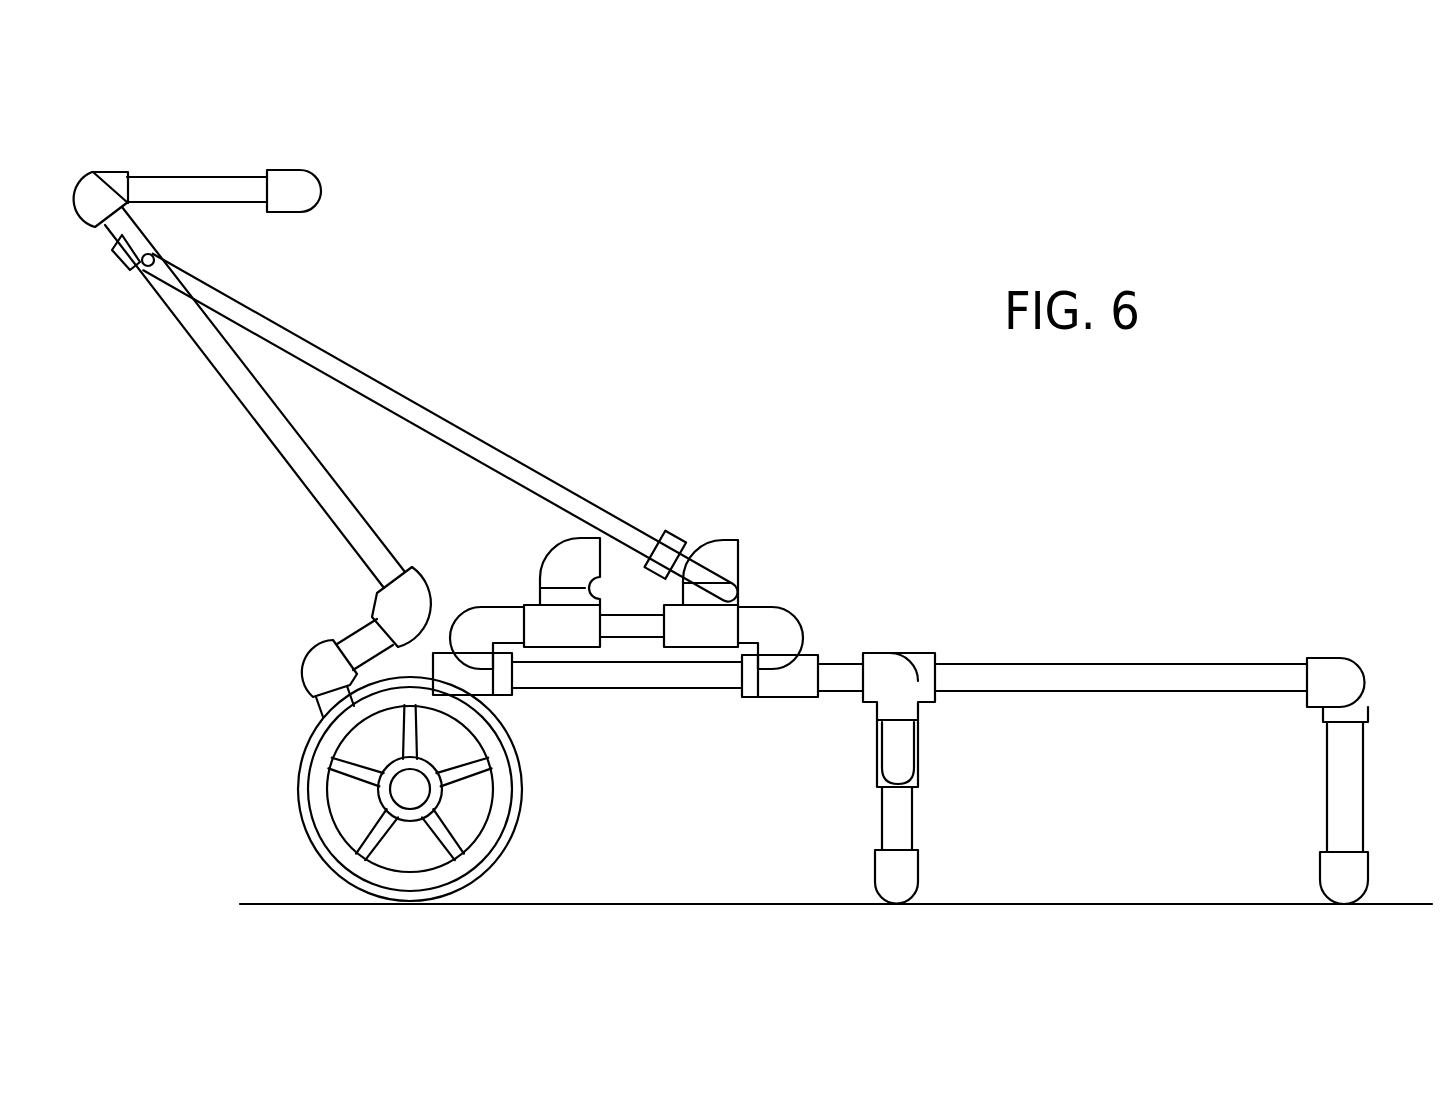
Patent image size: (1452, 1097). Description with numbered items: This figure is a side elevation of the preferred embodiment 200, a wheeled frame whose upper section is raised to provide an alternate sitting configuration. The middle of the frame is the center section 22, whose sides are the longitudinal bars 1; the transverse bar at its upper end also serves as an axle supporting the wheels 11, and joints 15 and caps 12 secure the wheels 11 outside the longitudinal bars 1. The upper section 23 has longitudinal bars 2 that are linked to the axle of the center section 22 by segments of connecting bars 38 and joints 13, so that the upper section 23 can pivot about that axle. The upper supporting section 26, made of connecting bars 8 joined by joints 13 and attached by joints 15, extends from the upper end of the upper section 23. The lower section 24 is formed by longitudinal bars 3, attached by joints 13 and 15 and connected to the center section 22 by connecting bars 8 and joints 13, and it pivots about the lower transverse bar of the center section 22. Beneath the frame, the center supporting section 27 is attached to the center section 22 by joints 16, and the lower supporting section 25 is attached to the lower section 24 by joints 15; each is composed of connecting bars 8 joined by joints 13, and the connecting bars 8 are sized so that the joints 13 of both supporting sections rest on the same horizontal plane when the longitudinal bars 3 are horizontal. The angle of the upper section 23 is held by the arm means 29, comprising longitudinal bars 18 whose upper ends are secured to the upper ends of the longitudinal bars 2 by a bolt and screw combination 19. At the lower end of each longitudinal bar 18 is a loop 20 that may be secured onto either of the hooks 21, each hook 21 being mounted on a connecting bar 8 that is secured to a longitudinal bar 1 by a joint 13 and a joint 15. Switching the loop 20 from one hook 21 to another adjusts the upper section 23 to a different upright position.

The longitudinal bar 1 is at (640, 690).
The longitudinal bar 2 is at (357, 520).
The longitudinal bar 3 is at (1133, 668).
The connecting bar 8 is at (193, 200).
The wheel 11 is at (541, 784).
The cap 12 is at (399, 803).
The joint 13 is at (310, 190).
The joint 15 is at (104, 158).
The joint 16 is at (937, 774).
The longitudinal bar 18 is at (390, 400).
The bolt and screw combination 19 is at (172, 256).
The loop 20 is at (658, 545).
The hook 21 is at (565, 580).
The center section 22 is at (713, 784).
The upper section 23 is at (250, 490).
The lower section 24 is at (1208, 720).
The lower supporting section 25 is at (1383, 791).
The upper supporting section 26 is at (212, 157).
The center supporting section 27 is at (935, 820).
The arm means 29 is at (540, 413).
The connecting bar 38 is at (345, 640).
The preferred embodiment 200 is at (1036, 558).